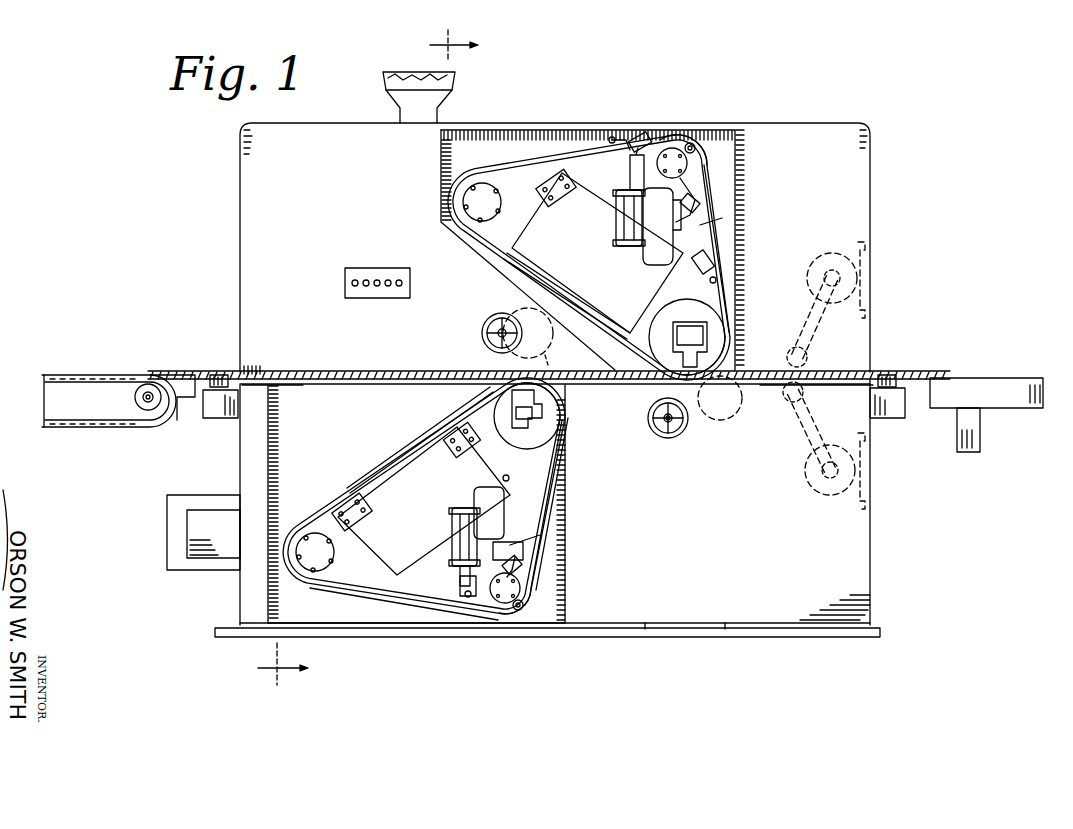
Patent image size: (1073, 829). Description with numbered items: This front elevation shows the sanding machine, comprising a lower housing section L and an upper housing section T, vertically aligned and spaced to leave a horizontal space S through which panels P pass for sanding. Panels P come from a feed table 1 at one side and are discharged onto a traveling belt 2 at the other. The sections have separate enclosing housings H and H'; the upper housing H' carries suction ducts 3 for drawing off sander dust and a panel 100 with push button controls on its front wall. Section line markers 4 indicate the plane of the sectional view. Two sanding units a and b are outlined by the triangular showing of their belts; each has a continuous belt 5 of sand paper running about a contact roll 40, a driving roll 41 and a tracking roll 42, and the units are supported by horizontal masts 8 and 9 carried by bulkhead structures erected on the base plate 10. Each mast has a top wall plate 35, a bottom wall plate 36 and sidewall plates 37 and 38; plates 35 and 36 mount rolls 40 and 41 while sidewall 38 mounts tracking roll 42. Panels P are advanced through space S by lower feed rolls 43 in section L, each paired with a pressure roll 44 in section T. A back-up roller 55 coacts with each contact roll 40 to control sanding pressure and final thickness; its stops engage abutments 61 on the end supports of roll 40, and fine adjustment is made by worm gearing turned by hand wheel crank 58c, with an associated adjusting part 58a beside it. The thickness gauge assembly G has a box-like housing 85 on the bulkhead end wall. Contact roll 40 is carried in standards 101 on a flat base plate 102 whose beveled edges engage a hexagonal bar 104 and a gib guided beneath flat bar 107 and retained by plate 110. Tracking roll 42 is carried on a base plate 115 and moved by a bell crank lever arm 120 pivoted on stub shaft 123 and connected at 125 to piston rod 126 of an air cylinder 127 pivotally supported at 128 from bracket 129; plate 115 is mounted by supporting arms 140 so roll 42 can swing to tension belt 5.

The feed table 1 is at (1000, 395).
The traveling belt 2 is at (48, 372).
The suction ducts 3 is at (400, 110).
The section line 4 is at (113, 375).
The sanding belt 5 is at (730, 268).
The mast 8 is at (530, 273).
The mast 9 is at (428, 470).
The base plate 10 is at (705, 635).
The top wall plate 35 is at (565, 492).
The bottom wall plate 36 is at (380, 590).
The sidewall plate 37 is at (360, 477).
The sidewall plate 38 is at (470, 568).
The contact roll 40 is at (732, 318).
The driving roll 41 is at (470, 222).
The tracking roll 42 is at (690, 165).
The lower feed rolls 43 is at (268, 385).
The pressure roll 44 is at (298, 370).
The back-up roller 55 is at (545, 308).
The handwheel hub 58a is at (690, 418).
The hand wheel crank 58c is at (481, 333).
The abutments 61 is at (606, 380).
The housing 85 is at (222, 418).
The panel 100 is at (345, 290).
The supporting standards 101 is at (505, 215).
The base plate 102 is at (540, 215).
The hexagonal bar 104 is at (705, 208).
The flat bar 107 is at (542, 182).
The plate 110 is at (610, 145).
The base plate 115 is at (695, 195).
The lever arm 120 is at (670, 140).
The stub shaft 123 is at (700, 145).
The pivotal connection 125 is at (630, 140).
The piston rod 126 is at (630, 160).
The air cylinder 127 is at (615, 220).
The pivotal support 128 is at (625, 250).
The bracket 129 is at (712, 222).
The supporting arms 140 is at (548, 545).
The sanding unit a is at (700, 247).
The sanding unit b is at (380, 455).
The thickness gauge assembly G is at (208, 371).
The lower housing H is at (518, 505).
The upper housing H' is at (469, 250).
The lower housing section L is at (872, 530).
The panel P is at (393, 371).
The horizontal space S is at (552, 316).
The upper housing section T is at (880, 140).